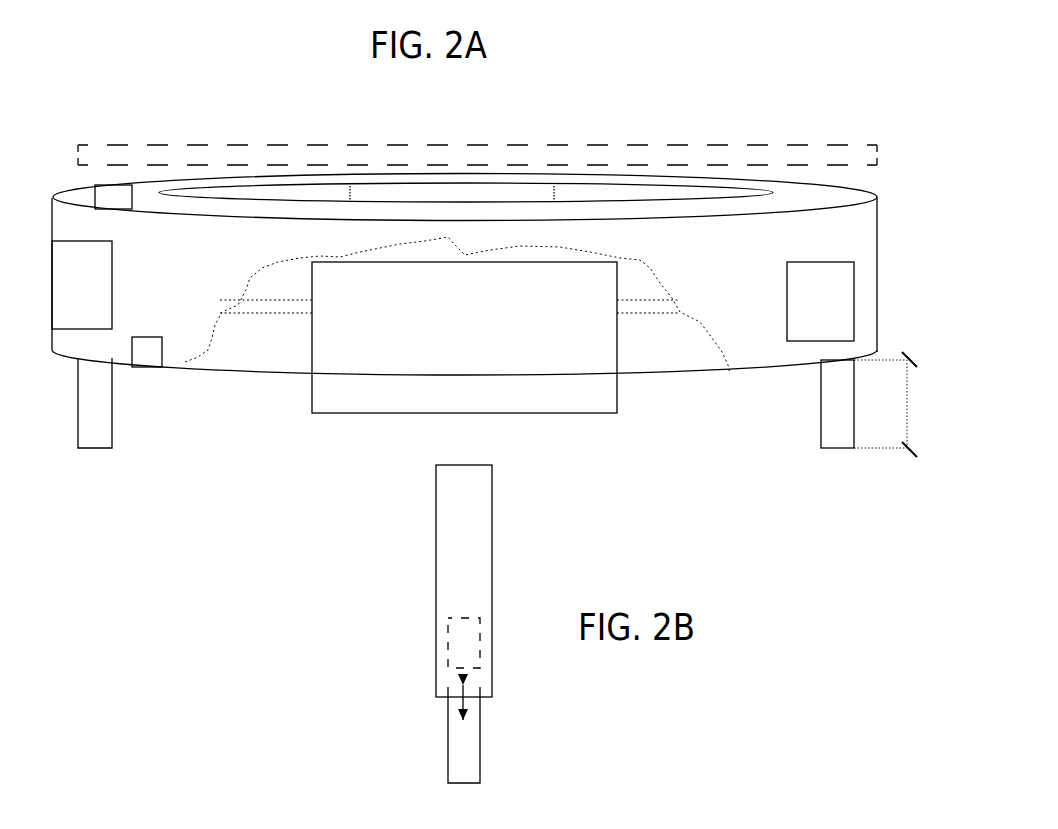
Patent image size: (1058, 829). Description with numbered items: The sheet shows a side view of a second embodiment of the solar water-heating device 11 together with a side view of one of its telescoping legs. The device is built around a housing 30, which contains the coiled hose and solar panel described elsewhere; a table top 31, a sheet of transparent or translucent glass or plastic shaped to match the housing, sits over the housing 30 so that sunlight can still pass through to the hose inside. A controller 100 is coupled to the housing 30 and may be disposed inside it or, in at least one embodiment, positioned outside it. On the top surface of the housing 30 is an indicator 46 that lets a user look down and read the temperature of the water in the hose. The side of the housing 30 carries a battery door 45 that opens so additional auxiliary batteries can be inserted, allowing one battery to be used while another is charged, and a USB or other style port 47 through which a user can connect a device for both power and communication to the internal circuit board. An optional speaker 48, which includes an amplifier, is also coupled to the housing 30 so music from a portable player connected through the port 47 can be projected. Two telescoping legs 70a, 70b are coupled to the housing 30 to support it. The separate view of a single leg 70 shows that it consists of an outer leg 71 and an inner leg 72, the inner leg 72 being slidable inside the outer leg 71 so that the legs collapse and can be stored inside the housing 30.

In FIG. 2A, the trampoline device 11 is at (476, 272).
In FIG. 2A, the table top 31 is at (720, 143).
In FIG. 2A, the housing 30 is at (858, 240).
In FIG. 2A, the indicator 46 is at (113, 198).
In FIG. 2A, the speaker 48 is at (850, 285).
In FIG. 2A, the battery door 45 is at (70, 312).
In FIG. 2A, the USB or other style port 47 is at (145, 368).
In FIG. 2A, the leg 70a is at (112, 423).
In FIG. 2A, the leg 70b is at (837, 437).
In FIG. 2A, the controller 100 is at (603, 405).
In FIG. 2B, the leg 70 is at (362, 624).
In FIG. 2B, the outer leg 71 is at (436, 618).
In FIG. 2B, the inner leg 72 is at (457, 765).